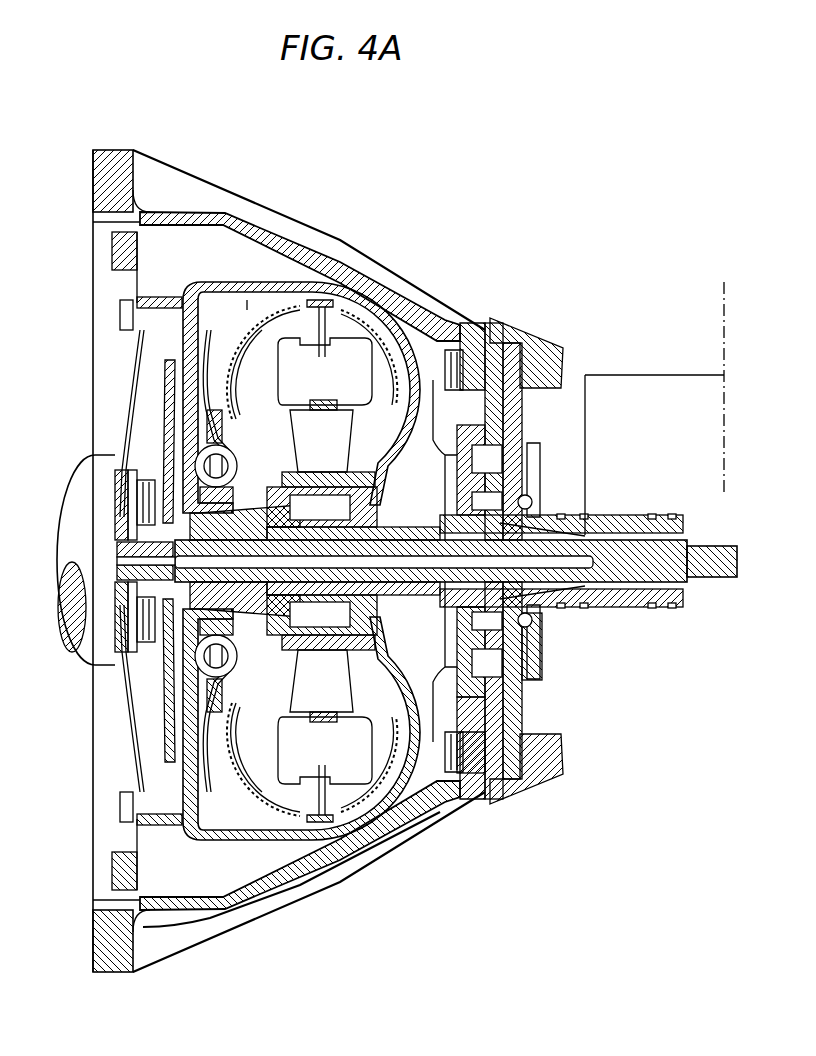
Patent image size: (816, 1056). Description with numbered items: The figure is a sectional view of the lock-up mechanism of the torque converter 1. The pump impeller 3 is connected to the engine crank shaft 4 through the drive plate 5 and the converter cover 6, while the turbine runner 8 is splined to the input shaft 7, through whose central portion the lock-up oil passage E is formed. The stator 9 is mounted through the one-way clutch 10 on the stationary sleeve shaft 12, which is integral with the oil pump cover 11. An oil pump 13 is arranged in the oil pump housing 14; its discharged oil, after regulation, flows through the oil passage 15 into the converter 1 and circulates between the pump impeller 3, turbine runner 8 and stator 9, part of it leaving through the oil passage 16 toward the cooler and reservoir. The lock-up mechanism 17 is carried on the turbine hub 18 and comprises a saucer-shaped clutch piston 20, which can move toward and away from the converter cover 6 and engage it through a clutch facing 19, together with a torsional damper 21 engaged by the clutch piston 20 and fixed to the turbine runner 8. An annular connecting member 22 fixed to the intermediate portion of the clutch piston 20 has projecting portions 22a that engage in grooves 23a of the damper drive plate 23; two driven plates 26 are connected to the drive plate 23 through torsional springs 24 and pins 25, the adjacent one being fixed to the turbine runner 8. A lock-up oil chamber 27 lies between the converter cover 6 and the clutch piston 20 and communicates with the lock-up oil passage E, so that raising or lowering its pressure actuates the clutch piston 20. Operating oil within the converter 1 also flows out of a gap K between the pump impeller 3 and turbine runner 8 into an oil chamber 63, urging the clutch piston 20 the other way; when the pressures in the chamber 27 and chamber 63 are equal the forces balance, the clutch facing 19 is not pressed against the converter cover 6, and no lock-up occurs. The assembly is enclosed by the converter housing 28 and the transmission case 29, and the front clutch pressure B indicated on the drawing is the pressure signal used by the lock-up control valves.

The torque converter 1 is at (313, 285).
The pump impeller 3 is at (380, 298).
The crank shaft 4 is at (86, 483).
The drive plate 5 is at (130, 380).
The converter cover 6 is at (165, 712).
The input shaft 7 is at (722, 583).
The turbine runner 8 is at (276, 330).
The stator 9 is at (347, 427).
The one-way clutch 10 is at (333, 473).
The oil pump cover 11 is at (505, 416).
The stationary sleeve shaft 12 is at (407, 620).
The oil pump 13 is at (490, 493).
The oil pump housing 14 is at (490, 695).
The oil passage 15 is at (410, 500).
The oil passage 16 is at (510, 612).
The lock-up mechanism 17 is at (160, 353).
The turbine hub 18 is at (232, 518).
The clutch facing 19 is at (170, 322).
The clutch piston 20 is at (183, 402).
The torsional damper 21 is at (200, 495).
The annular connecting member 22 is at (198, 385).
The projecting portions 22a is at (228, 405).
The drive plate 23 is at (210, 427).
The grooves 23a is at (223, 692).
The torsional springs 24 is at (262, 463).
The pins 25 is at (195, 668).
The driven plates 26 is at (243, 692).
The lock-up oil chamber 27 is at (175, 690).
The converter housing 28 is at (440, 835).
The transmission case 29 is at (545, 777).
The oil chamber 63 is at (247, 300).
The gap K is at (333, 298).
The lock-up oil passage E is at (547, 562).
The front clutch pressure B is at (720, 385).